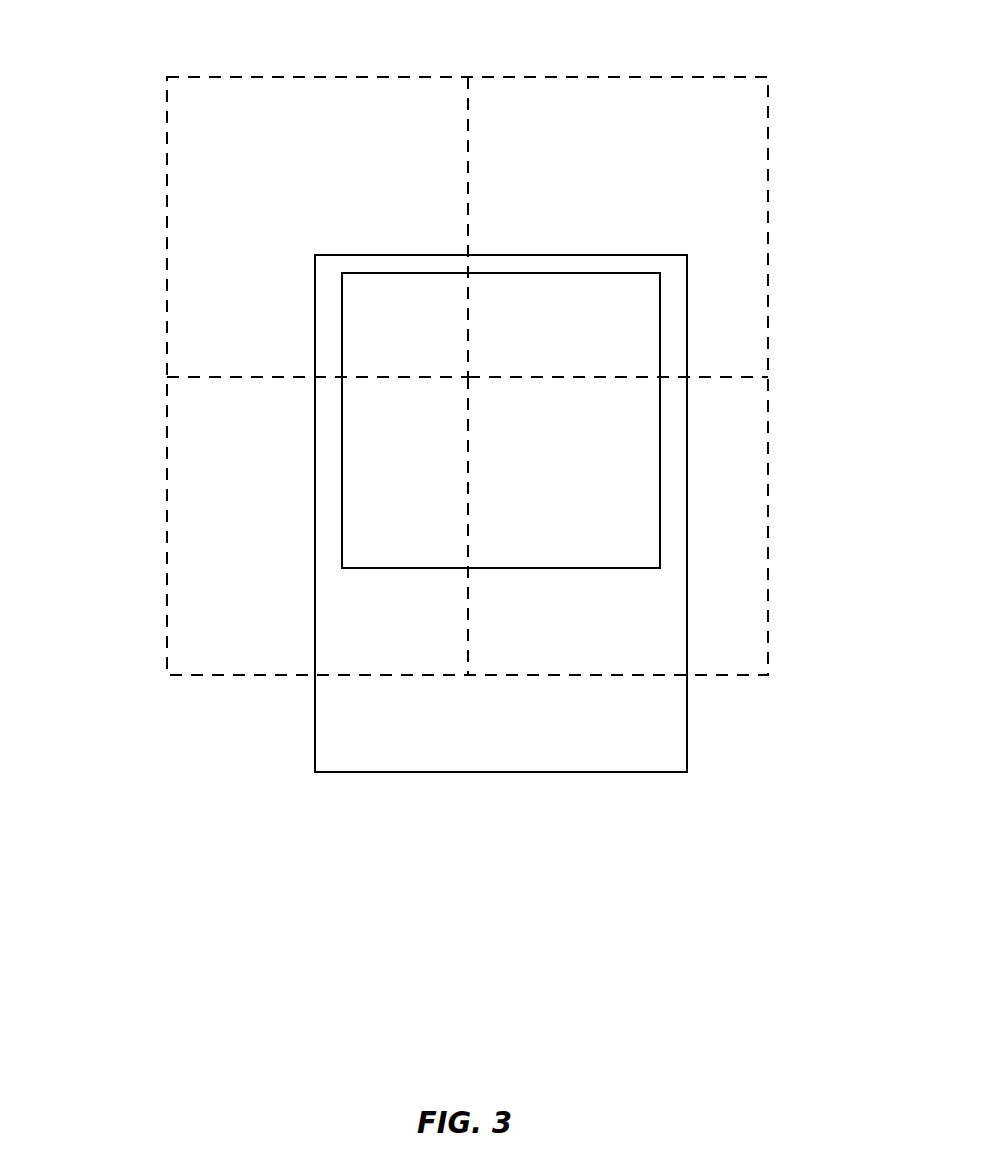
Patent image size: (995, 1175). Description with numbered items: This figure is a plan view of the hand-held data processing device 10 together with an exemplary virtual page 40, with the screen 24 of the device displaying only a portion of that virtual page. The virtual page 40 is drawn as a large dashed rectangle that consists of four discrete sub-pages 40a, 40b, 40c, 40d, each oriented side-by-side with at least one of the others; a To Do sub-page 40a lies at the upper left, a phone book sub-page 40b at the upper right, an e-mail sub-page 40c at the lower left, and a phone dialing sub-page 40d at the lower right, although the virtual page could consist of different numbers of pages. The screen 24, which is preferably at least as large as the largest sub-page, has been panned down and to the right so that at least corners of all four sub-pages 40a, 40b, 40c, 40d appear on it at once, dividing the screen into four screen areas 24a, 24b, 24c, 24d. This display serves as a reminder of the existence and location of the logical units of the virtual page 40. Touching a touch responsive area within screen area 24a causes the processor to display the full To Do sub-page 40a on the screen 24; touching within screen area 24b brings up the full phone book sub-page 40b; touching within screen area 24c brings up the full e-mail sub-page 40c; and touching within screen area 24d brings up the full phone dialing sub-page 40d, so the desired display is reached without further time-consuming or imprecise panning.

The hand-held data processing device 10 is at (310, 730).
The screen 24 is at (638, 337).
The screen area 24a is at (426, 337).
The screen area 24b is at (585, 337).
The screen area 24c is at (426, 497).
The screen area 24d is at (585, 497).
The virtual page 40 is at (263, 77).
The sub-page 40a is at (224, 203).
The sub-page 40b is at (711, 173).
The sub-page 40c is at (224, 503).
The sub-page 40d is at (730, 538).